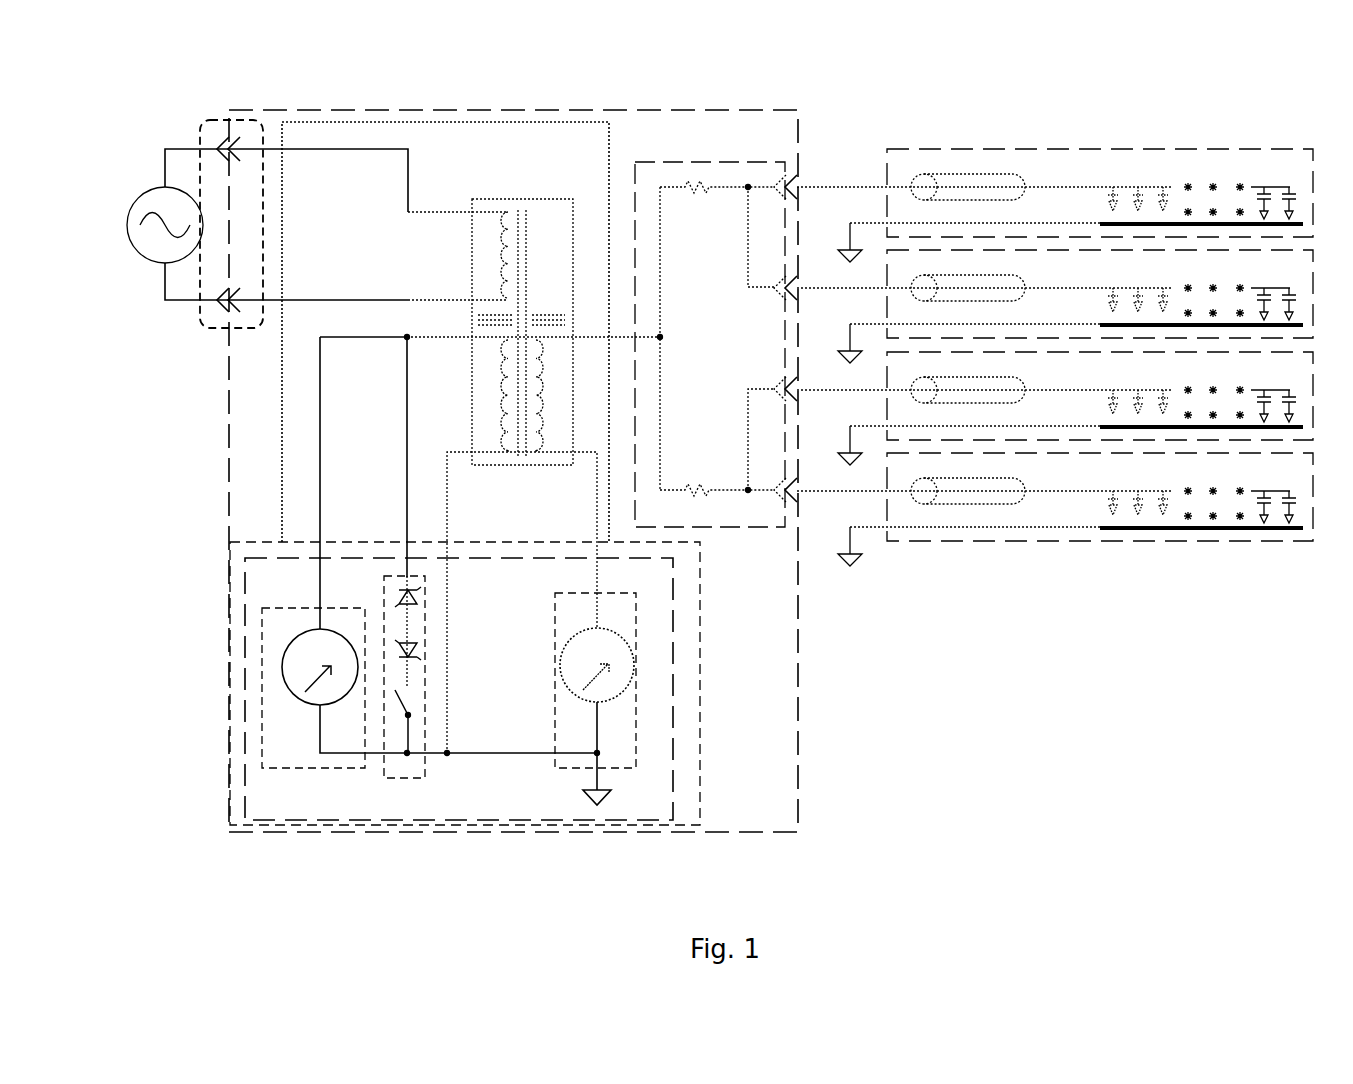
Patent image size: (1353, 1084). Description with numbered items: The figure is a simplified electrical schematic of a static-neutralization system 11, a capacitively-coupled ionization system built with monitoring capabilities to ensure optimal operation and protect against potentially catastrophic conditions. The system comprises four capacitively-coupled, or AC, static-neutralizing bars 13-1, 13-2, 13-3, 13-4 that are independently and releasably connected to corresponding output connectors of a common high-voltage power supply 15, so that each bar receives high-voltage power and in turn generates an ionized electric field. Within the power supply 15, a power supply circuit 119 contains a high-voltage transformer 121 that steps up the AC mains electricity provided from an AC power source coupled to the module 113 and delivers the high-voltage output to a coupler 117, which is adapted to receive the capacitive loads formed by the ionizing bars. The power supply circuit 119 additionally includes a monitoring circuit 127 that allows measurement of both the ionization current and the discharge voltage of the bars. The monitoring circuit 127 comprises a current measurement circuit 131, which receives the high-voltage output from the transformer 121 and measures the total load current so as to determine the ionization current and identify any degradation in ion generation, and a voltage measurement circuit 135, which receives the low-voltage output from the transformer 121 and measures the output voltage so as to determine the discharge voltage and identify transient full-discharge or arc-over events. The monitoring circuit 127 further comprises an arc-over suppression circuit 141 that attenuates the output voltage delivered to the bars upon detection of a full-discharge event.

The static-neutralization system 11 is at (1047, 818).
The static-neutralizing bar 13-1 is at (1217, 148).
The static-neutralizing bar 13-2 is at (1093, 248).
The static-neutralizing bar 13-3 is at (1075, 440).
The static-neutralizing bar 13-4 is at (965, 541).
The high-voltage power supply 15 is at (753, 832).
The module 113 is at (205, 328).
The coupler 117 is at (745, 527).
The power supply circuit 119 is at (450, 110).
The high-voltage transformer 121 is at (480, 465).
The monitoring circuit 127 is at (673, 682).
The current measurement circuit 131 is at (555, 615).
The voltage measurement circuit 135 is at (297, 770).
The arc-over suppression circuit 141 is at (427, 778).